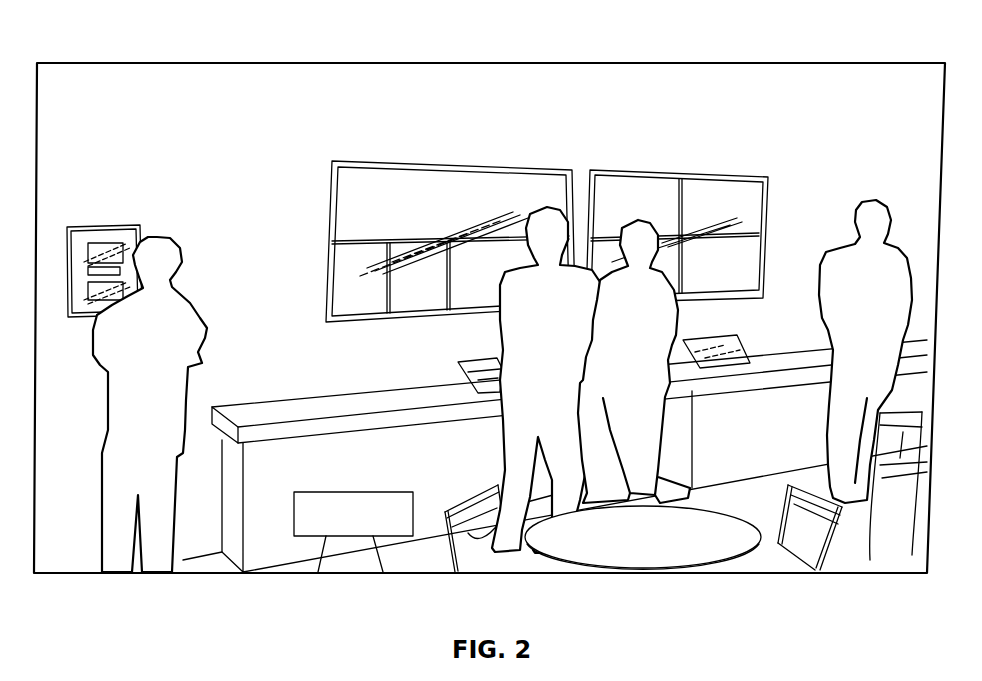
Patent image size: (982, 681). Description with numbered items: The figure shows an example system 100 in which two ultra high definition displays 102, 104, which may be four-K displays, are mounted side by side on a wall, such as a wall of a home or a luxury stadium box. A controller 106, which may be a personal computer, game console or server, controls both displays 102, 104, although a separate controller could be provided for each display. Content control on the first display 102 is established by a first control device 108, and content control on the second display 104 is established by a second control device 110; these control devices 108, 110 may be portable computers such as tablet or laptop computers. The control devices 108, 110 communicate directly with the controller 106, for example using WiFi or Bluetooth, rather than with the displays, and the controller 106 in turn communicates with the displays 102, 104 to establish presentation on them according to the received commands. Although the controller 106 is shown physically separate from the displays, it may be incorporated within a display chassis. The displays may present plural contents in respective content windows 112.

The system 100 is at (245, 52).
The first display 102 is at (487, 162).
The second display 104 is at (705, 172).
The controller 106 is at (400, 490).
The first control device 108 is at (462, 371).
The second control device 110 is at (735, 334).
The content windows 112 is at (350, 218).